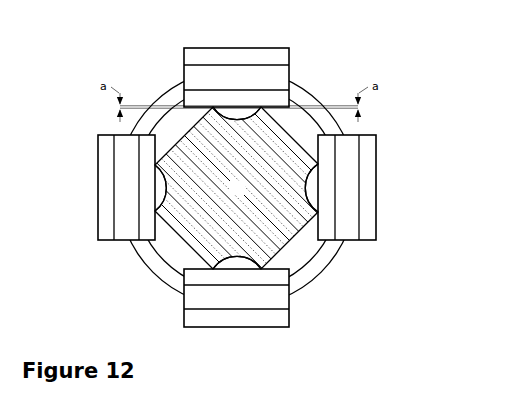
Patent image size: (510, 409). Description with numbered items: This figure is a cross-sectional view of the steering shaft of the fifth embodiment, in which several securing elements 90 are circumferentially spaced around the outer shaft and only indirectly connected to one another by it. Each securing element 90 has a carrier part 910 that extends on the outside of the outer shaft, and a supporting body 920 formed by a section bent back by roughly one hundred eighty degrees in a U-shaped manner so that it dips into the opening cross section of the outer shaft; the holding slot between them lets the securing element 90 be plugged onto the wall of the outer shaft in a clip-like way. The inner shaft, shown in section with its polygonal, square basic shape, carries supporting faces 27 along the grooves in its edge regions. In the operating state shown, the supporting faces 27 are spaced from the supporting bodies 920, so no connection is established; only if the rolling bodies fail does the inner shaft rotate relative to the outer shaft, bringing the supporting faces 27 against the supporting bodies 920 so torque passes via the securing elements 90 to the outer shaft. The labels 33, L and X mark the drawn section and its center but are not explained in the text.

The supporting faces 27 is at (216, 104).
The core 33 is at (195, 179).
The securing element 90 is at (281, 47).
The carrier part 910 is at (238, 57).
The supporting body 920 is at (203, 98).
The line L is at (258, 218).
The center point X is at (237, 189).